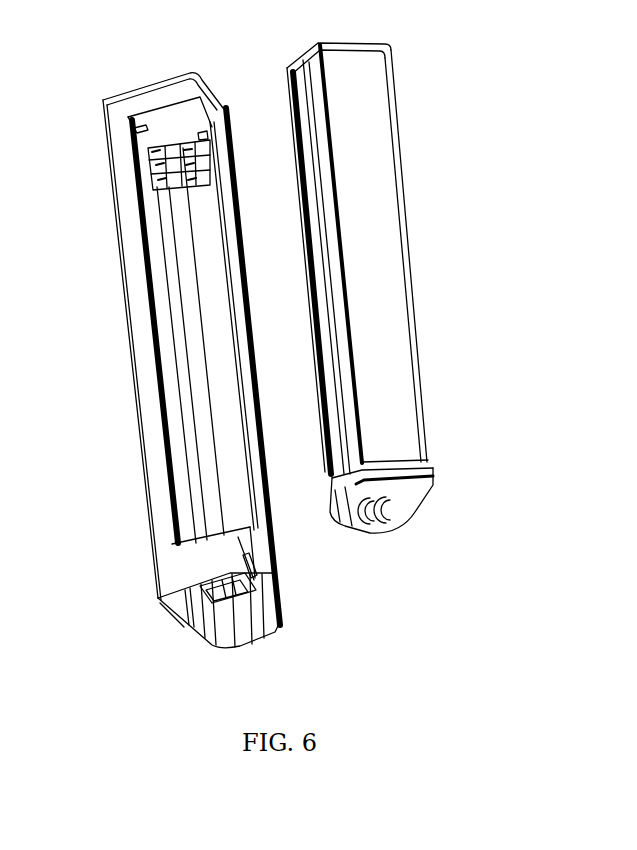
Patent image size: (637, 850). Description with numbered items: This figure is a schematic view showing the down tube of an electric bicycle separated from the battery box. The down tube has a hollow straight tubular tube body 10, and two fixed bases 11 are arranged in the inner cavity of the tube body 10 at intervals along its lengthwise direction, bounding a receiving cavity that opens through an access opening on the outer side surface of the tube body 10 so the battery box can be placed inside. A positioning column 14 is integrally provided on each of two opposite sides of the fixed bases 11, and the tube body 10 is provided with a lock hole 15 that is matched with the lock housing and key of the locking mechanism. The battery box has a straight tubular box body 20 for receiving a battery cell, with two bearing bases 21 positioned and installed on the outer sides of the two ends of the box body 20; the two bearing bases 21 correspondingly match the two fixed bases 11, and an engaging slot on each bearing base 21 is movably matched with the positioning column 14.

The tube body 10 is at (208, 362).
The fixed base 11 is at (170, 120).
The positioning column 14 is at (135, 110).
The lock hole 15 is at (262, 568).
The box body 20 is at (378, 311).
The bearing base 21 is at (401, 496).